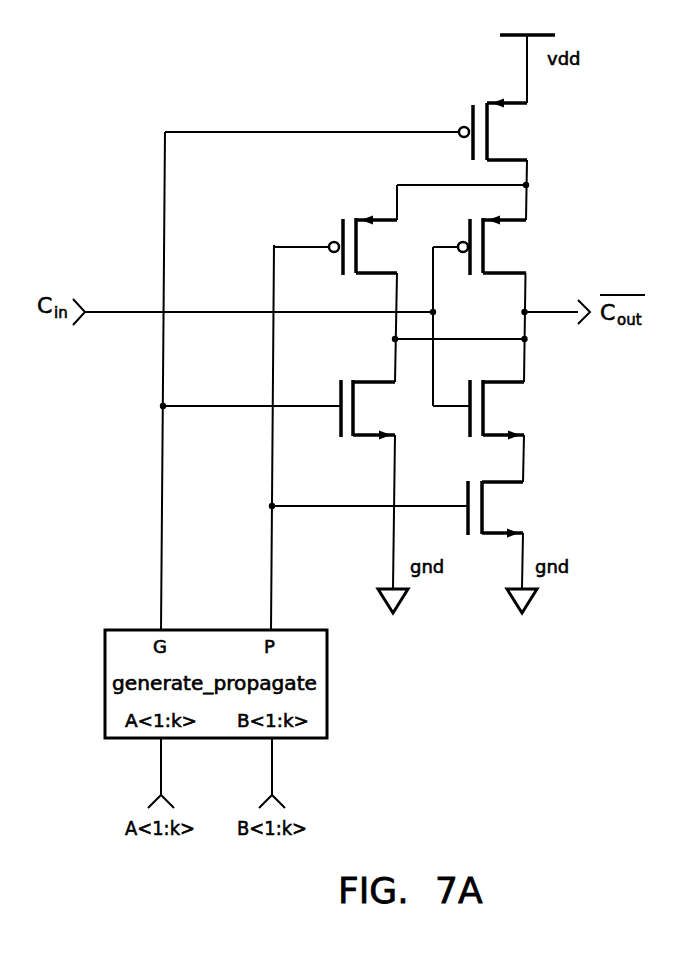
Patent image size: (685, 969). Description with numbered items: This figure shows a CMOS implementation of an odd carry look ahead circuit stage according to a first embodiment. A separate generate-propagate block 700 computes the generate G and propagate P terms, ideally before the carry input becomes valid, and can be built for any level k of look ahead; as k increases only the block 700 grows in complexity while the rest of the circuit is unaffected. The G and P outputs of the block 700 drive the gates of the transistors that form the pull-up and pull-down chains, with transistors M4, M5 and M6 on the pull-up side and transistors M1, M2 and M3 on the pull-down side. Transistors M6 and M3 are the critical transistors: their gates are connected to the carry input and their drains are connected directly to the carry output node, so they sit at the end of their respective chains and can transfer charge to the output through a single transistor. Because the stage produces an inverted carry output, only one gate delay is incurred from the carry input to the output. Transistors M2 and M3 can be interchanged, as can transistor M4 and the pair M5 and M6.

The generate-propagate block 700 is at (327, 697).
The transistor M1 is at (370, 410).
The transistor M2 is at (497, 509).
The transistor M3 is at (500, 410).
The transistor M4 is at (495, 130).
The transistor M5 is at (365, 246).
The transistor M6 is at (494, 246).